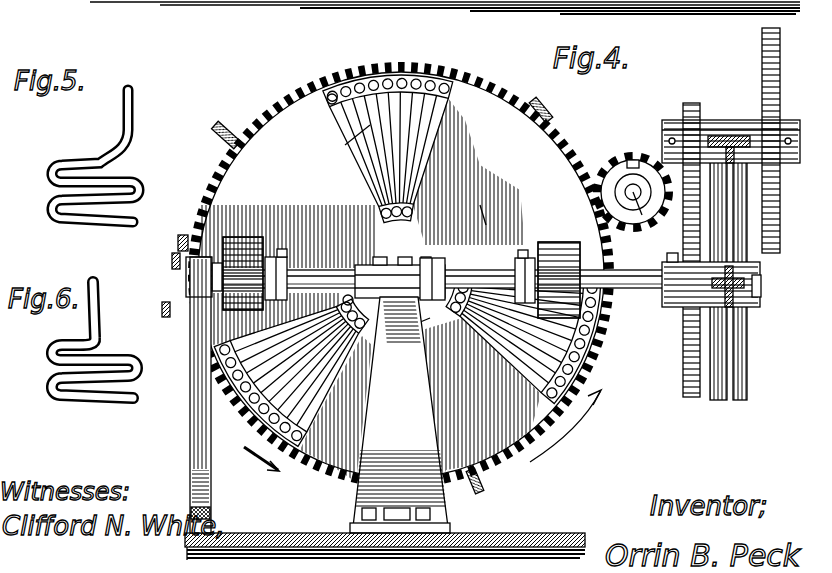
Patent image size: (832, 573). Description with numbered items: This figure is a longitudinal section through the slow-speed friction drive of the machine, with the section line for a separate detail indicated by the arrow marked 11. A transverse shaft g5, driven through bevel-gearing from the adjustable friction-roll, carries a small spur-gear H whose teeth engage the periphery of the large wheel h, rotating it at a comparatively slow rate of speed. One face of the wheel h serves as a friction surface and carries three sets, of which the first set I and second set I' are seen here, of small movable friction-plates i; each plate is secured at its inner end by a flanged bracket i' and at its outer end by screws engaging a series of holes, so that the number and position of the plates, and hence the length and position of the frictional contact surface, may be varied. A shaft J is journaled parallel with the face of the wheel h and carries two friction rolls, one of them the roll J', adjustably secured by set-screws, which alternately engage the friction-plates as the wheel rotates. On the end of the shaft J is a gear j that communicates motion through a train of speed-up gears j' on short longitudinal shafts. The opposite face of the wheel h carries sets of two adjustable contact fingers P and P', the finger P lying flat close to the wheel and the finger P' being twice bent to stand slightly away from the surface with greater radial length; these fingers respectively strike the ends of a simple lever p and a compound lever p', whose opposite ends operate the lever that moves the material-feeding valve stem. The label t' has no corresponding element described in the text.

In FIG. 4, the shaft J is at (417, 275).
In FIG. 4, the friction roll J' is at (547, 260).
In FIG. 4, the set of friction-plates I is at (520, 320).
In FIG. 4, the set of friction-plates I' is at (392, 148).
In FIG. 4, the friction-plate i is at (315, 321).
In FIG. 4, the flanged bracket i' is at (344, 149).
In FIG. 4, the large wheel h is at (475, 203).
In FIG. 4, the spur-gear H is at (612, 160).
In FIG. 4, the transverse shaft g5 is at (610, 240).
In FIG. 4, the gear j is at (704, 307).
In FIG. 4, the speed-up gear j' is at (722, 240).
In FIG. 4, the finger P is at (360, 296).
In FIG. 5, the finger P is at (171, 208).
In FIG. 6, the finger P is at (111, 293).
In FIG. 4, the finger P' is at (219, 118).
In FIG. 5, the finger P' is at (145, 98).
In FIG. 4, the lever p is at (161, 262).
In FIG. 4, the compound lever p' is at (154, 305).
In FIG. 4, the pedestal rib t' is at (411, 333).
In FIG. 4, the arrow 11 is at (259, 459).